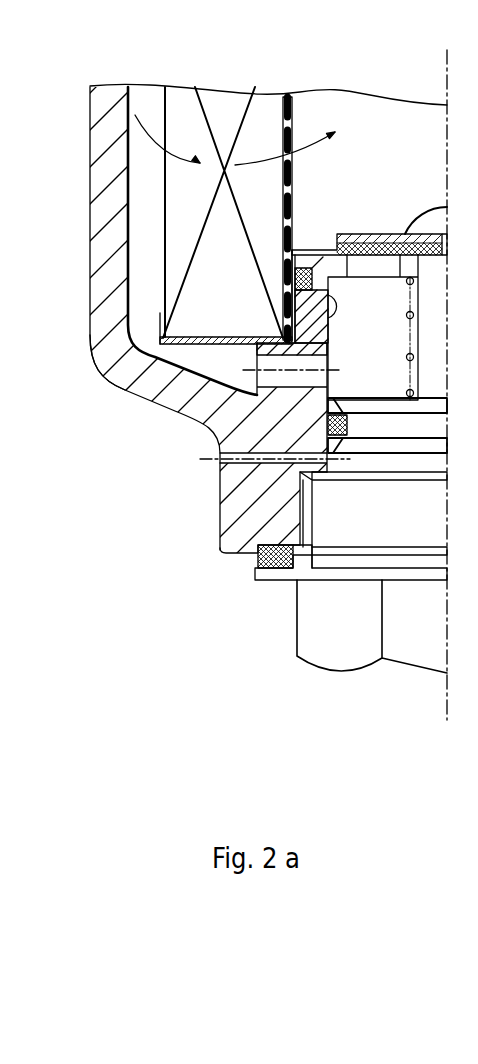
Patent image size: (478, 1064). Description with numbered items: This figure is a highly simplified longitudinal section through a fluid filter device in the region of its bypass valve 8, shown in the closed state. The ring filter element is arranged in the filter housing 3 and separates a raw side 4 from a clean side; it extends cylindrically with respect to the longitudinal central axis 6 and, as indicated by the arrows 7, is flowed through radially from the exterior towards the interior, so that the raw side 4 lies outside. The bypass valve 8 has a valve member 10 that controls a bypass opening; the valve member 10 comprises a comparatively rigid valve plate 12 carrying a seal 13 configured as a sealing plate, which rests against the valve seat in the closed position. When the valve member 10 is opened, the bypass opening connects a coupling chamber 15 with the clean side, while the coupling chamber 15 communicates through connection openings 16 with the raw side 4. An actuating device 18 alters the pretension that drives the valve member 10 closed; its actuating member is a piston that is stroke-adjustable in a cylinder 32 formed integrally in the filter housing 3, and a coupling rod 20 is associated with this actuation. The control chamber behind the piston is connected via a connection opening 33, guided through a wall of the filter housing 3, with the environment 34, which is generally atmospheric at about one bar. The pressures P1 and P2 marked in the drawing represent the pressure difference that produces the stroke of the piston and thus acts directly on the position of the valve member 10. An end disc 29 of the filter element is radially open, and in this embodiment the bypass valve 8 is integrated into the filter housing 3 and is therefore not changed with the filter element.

The filter housing 3 is at (112, 163).
The raw side 4 is at (140, 230).
The longitudinal central axis 6 is at (447, 88).
The arrows 7 is at (146, 123).
The bypass valve 8 is at (275, 513).
The valve member 10 is at (392, 228).
The valve plate 12 is at (360, 235).
The seal 13 is at (335, 250).
The coupling chamber 15 is at (360, 320).
The connection openings 16 is at (178, 408).
The actuating device 18 is at (371, 460).
The coupling rod 20 is at (432, 333).
The end disc 29 is at (170, 385).
The cylinder 32 is at (320, 294).
The connection opening 33 is at (218, 460).
The outer region 34 is at (60, 488).
The pressure P1 is at (230, 375).
The pressure P2 is at (350, 128).